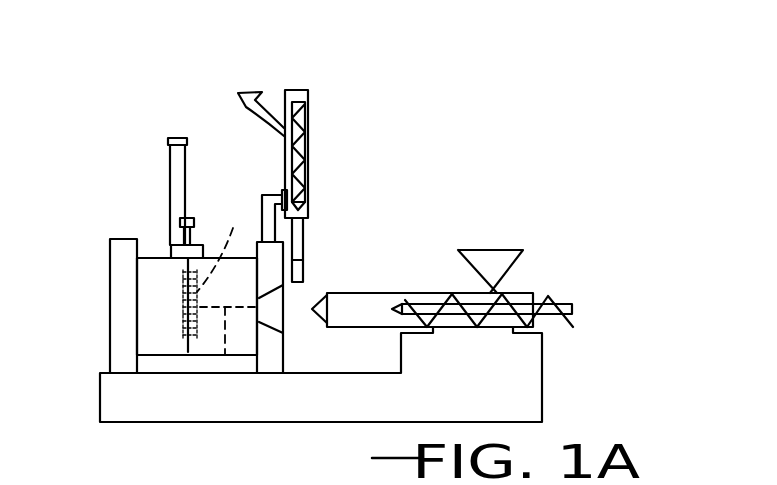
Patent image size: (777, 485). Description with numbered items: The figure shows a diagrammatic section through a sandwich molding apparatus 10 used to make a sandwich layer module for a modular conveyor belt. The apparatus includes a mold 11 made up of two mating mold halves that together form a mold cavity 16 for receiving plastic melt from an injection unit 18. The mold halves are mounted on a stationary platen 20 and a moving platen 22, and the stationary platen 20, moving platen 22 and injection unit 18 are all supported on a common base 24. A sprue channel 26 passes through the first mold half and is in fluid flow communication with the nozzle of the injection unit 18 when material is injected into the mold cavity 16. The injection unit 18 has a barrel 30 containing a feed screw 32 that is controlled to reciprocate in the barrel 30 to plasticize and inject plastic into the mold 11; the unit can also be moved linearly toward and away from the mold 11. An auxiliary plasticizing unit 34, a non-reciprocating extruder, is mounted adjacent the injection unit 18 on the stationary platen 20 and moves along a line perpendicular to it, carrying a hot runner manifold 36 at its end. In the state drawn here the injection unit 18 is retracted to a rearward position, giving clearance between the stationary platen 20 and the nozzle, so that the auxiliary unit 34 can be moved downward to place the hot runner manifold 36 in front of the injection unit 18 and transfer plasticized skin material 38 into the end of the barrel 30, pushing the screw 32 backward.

The sandwich molding apparatus 10 is at (563, 4).
The mold 11 is at (153, 258).
The mold cavity 16 is at (221, 249).
The injection unit 18 is at (509, 238).
The stationary platen 20 is at (283, 357).
The moving platen 22 is at (110, 355).
The common base 24 is at (535, 398).
The sprue channel 26 is at (221, 360).
The barrel 30 is at (358, 300).
The feed screw 32 is at (554, 300).
The auxiliary plasticizing unit 34 is at (308, 94).
The hot runner manifold 36 is at (302, 240).
The skin material 38 is at (303, 455).